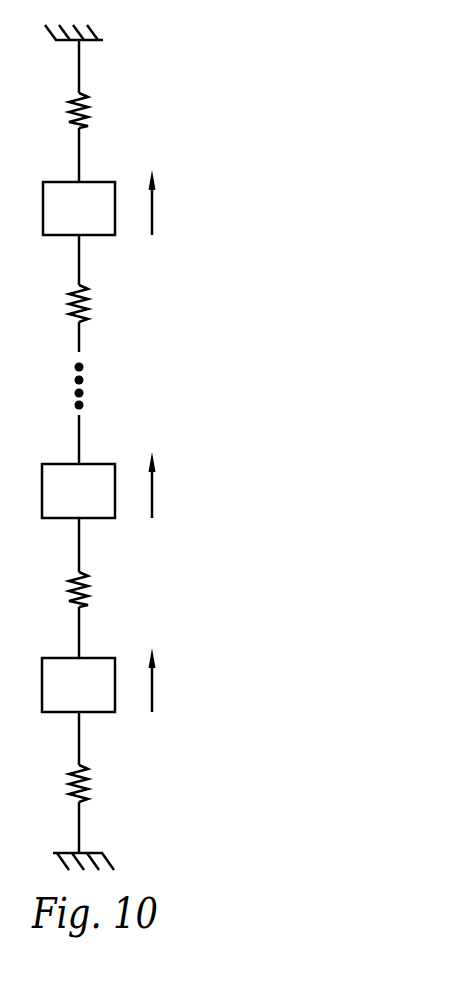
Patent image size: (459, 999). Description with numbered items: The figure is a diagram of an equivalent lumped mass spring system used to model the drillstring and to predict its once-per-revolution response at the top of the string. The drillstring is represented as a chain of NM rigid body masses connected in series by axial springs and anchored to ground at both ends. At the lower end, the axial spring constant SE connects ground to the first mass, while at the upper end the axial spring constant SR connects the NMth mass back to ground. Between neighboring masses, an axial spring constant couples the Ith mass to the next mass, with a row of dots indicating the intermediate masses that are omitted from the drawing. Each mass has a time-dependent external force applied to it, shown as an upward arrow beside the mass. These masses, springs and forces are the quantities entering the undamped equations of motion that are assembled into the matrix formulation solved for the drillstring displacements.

The axial spring constant between NMth mass and ground SR is at (94, 110).
The axial spring constant between ground and first mass SE is at (94, 783).